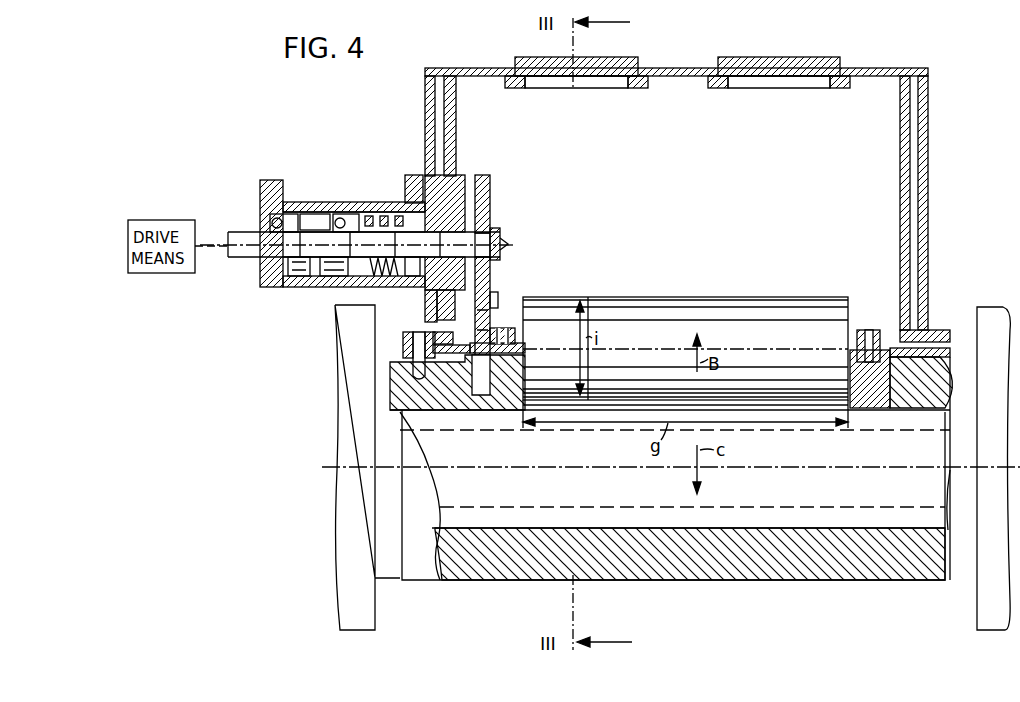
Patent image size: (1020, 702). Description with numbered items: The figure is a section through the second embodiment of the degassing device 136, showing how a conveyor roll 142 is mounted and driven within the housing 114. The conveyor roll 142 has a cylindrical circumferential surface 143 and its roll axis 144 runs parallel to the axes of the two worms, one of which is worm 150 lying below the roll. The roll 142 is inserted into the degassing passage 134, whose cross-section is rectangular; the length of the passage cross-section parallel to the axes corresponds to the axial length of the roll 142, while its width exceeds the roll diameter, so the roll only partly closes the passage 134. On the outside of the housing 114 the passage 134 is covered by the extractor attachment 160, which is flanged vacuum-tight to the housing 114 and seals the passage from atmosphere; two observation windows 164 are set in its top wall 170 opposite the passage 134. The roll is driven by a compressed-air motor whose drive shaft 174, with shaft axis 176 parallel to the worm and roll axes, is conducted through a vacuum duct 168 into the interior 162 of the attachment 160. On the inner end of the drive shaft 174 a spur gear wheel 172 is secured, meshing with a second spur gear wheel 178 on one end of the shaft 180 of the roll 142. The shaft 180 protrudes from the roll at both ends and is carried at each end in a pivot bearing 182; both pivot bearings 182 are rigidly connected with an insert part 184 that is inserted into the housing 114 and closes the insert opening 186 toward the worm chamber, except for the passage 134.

The housing 114 is at (854, 583).
The degassing passage 134 is at (803, 410).
The degassing device 136 is at (911, 52).
The conveyor roll 142 is at (798, 318).
The cylindrical circumferential surface 143 is at (742, 298).
The roll axis 144 is at (650, 343).
The worm 150 is at (638, 496).
The extractor attachment 160 is at (915, 123).
The interior of the attachment 162 is at (888, 212).
The observation windows 164 is at (545, 68).
The vacuum duct 168 is at (387, 194).
The top wall 170 is at (684, 68).
The spur gear wheel 172 is at (490, 200).
The drive shaft 174 is at (240, 233).
The shaft axis 176 is at (501, 242).
The second spur gear wheel 178 is at (497, 296).
The shaft of the roll 180 is at (517, 342).
The pivot bearing 182 is at (503, 330).
The insert part 184 is at (868, 410).
The insert opening 186 is at (484, 412).